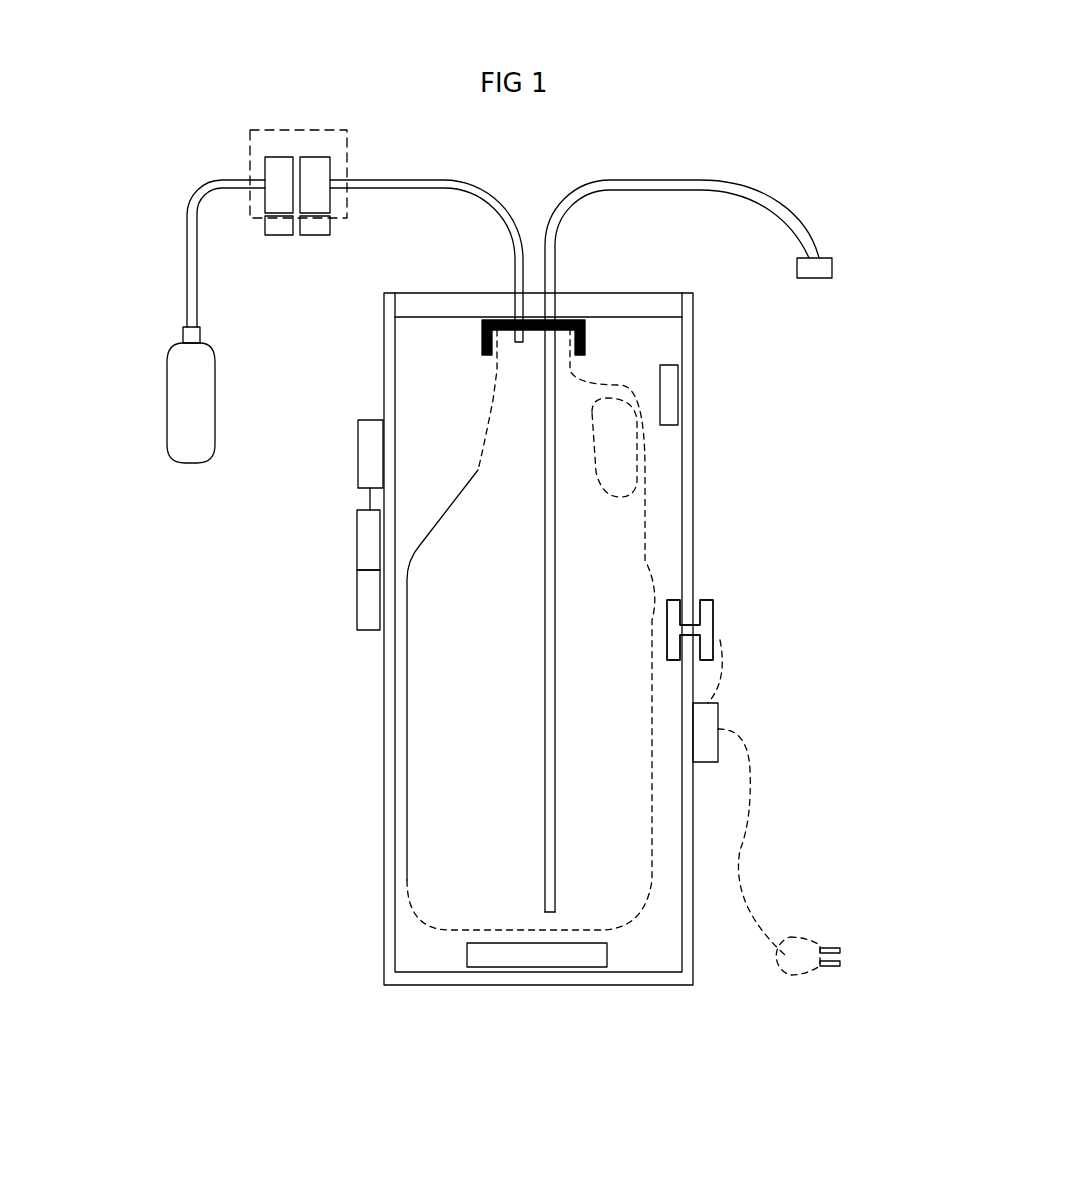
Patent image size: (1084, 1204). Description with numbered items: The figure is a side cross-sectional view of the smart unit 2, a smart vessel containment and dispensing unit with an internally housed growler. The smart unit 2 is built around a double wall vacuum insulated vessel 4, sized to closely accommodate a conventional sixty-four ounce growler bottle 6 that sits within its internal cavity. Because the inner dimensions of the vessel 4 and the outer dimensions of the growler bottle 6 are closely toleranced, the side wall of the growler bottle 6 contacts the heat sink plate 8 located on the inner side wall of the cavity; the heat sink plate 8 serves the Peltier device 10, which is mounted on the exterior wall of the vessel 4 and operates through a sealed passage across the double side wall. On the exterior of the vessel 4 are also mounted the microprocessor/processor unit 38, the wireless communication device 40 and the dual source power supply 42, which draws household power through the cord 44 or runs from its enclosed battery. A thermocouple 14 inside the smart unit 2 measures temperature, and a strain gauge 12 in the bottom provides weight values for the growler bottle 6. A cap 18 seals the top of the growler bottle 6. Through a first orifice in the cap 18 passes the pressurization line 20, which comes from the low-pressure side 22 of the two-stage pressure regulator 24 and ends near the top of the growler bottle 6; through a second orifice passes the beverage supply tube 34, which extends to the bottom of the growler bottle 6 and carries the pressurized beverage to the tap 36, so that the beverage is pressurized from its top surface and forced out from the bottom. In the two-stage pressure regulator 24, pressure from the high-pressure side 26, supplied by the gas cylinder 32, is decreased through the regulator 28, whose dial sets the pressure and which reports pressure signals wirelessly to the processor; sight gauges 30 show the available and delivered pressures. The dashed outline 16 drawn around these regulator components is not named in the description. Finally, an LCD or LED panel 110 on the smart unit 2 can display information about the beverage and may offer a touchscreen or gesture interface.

The smart unit 2 is at (194, 764).
The double wall vacuum insulated vessel 4 is at (393, 880).
The growler bottle 6 is at (438, 903).
The heat sink plate 8 is at (668, 600).
The Peltier device 10 is at (712, 616).
The strain gauge 12 is at (582, 955).
The thermocouple 14 is at (672, 393).
The valve assembly 16 is at (341, 131).
The cap 18 is at (484, 345).
The pressurization line 20 is at (483, 203).
The low-pressure side 22 is at (318, 172).
The two-stage pressure regulator 24 is at (262, 134).
The high-pressure side 26 is at (278, 172).
The pressure regulator 28 is at (318, 237).
The sight gauges 30 is at (278, 237).
The gas cylinder 32 is at (190, 460).
The beverage supply tube 34 is at (705, 184).
The tap 36 is at (832, 269).
The microprocessor/processor unit 38 is at (360, 548).
The wireless communication device 40 is at (360, 610).
The power supply 42 is at (716, 712).
The cord 44 is at (755, 935).
The LCD or LED panel 110 is at (356, 456).